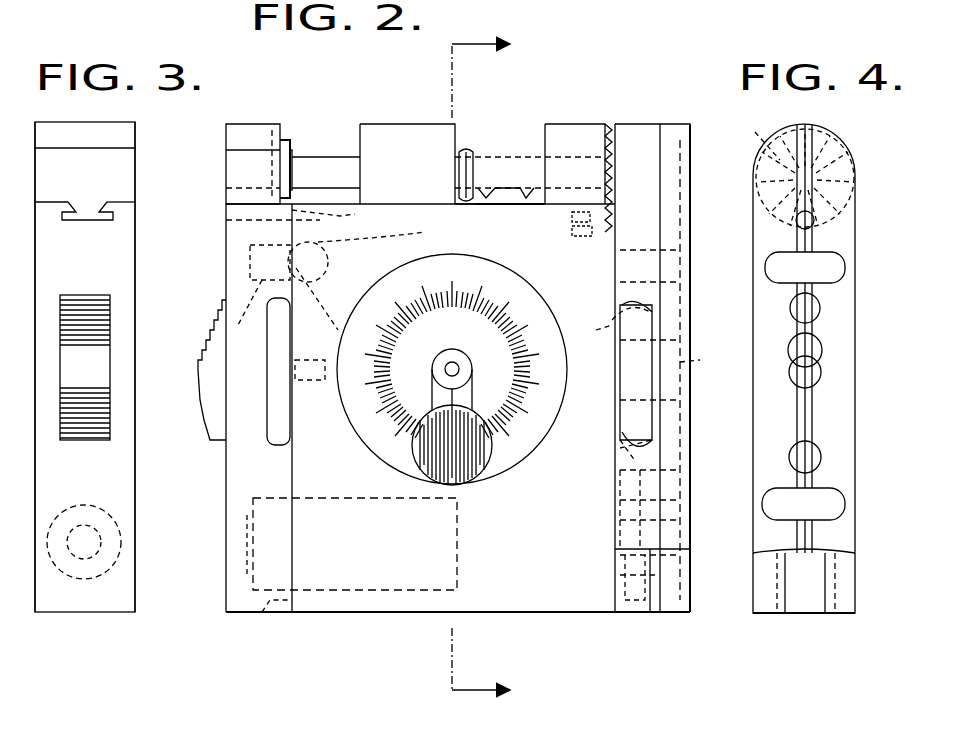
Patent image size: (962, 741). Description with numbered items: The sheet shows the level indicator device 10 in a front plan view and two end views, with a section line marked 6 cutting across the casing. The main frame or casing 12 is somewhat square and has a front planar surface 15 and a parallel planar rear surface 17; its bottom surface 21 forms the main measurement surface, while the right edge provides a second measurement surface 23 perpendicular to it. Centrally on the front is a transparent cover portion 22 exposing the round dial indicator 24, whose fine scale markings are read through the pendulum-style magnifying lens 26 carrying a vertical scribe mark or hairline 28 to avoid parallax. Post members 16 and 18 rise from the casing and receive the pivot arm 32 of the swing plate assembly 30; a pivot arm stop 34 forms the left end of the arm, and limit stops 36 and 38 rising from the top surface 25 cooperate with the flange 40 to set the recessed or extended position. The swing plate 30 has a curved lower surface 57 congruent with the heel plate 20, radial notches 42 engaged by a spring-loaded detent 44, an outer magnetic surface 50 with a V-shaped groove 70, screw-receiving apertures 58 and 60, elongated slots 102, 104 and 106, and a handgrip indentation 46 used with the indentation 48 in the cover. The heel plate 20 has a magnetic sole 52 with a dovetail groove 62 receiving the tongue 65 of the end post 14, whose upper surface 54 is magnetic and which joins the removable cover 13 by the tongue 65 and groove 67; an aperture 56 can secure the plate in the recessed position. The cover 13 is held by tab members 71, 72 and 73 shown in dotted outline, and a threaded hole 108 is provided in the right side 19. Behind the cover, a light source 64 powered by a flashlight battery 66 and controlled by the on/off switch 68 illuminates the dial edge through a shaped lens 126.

In FIG. 2, the level indicator device 10 is at (275, 650).
In FIG. 2, the main frame or casing 12 is at (562, 612).
In FIG. 3, the removable cover 13 is at (100, 614).
In FIG. 2, the removable cover 13 is at (240, 490).
In FIG. 3, the end post 14 is at (133, 160).
In FIG. 2, the end post 14 is at (228, 166).
In FIG. 3, the front planar surface 15 is at (136, 396).
In FIG. 2, the post member 16 is at (576, 128).
In FIG. 3, the planar rear surface 17 is at (36, 388).
In FIG. 2, the post member 18 is at (380, 136).
In FIG. 2, the right side of main casing 19 is at (618, 528).
In FIG. 2, the heel plate 20 is at (652, 612).
In FIG. 2, the bottom surface 21 is at (370, 612).
In FIG. 4, the bottom surface 21 is at (768, 614).
In FIG. 2, the transparent cover portion 22 is at (492, 472).
In FIG. 2, the second measurement surface 23 is at (688, 218).
In FIG. 2, the dial indicator 24 is at (528, 450).
In FIG. 2, the top surface of casing 25 is at (500, 206).
In FIG. 2, the magnifying lens 26 is at (400, 420).
In FIG. 2, the scribe mark or hairline 28 is at (466, 486).
In FIG. 2, the swing plate assembly 30 is at (640, 135).
In FIG. 2, the pivot arm 32 is at (322, 160).
In FIG. 4, the pivot arm 32 is at (749, 124).
In FIG. 2, the pivot arm stop 34 is at (287, 140).
In FIG. 2, the limit stop 36 is at (490, 160).
In FIG. 2, the limit stop 38 is at (532, 160).
In FIG. 2, the flange 40 is at (466, 150).
In FIG. 2, the notches 42 is at (613, 128).
In FIG. 4, the notches 42 is at (836, 162).
In FIG. 2, the spring-loaded detent 44 is at (590, 228).
In FIG. 4, the spring-loaded detent 44 is at (816, 224).
In FIG. 2, the indentation 46 is at (652, 420).
In FIG. 2, the indentation 48 is at (278, 420).
In FIG. 2, the outer magnetic surface 50 is at (706, 349).
In FIG. 4, the outer magnetic surface 50 is at (846, 416).
In FIG. 2, the magnetic sole 52 is at (664, 612).
In FIG. 4, the magnetic sole 52 is at (846, 600).
In FIG. 3, the upper surface 54 is at (50, 134).
In FIG. 2, the upper surface 54 is at (232, 136).
In FIG. 2, the screw-receiving aperture 56 is at (626, 612).
In FIG. 4, the curved lower surface 57 is at (770, 548).
In FIG. 2, the screw-receiving aperture 58 is at (692, 322).
In FIG. 4, the screw-receiving aperture 58 is at (820, 310).
In FIG. 2, the screw-receiving aperture 60 is at (683, 446).
In FIG. 4, the screw-receiving aperture 60 is at (822, 455).
In FIG. 4, the dovetail groove 62 is at (810, 616).
In FIG. 2, the light source 64 is at (285, 298).
In FIG. 3, the tongue 65 is at (86, 200).
In FIG. 3, the flashlight battery 66 is at (115, 532).
In FIG. 2, the flashlight battery 66 is at (462, 582).
In FIG. 3, the groove 67 is at (110, 220).
In FIG. 3, the on/off switch 68 is at (110, 326).
In FIG. 2, the on/off switch 68 is at (206, 440).
In FIG. 4, the V-shaped groove 70 is at (808, 542).
In FIG. 2, the tab member 71 is at (312, 387).
In FIG. 2, the tab member 72 is at (272, 612).
In FIG. 2, the tab member 73 is at (341, 223).
In FIG. 4, the elongated slot 102 is at (846, 268).
In FIG. 4, the elongated slot 104 is at (822, 350).
In FIG. 4, the elongated slot 106 is at (830, 498).
In FIG. 2, the threaded hole 108 is at (607, 323).
In FIG. 4, the threaded hole 108 is at (822, 372).
In FIG. 2, the shaped lens 126 is at (371, 245).
In FIG. 2, the section line 6 is at (468, 371).